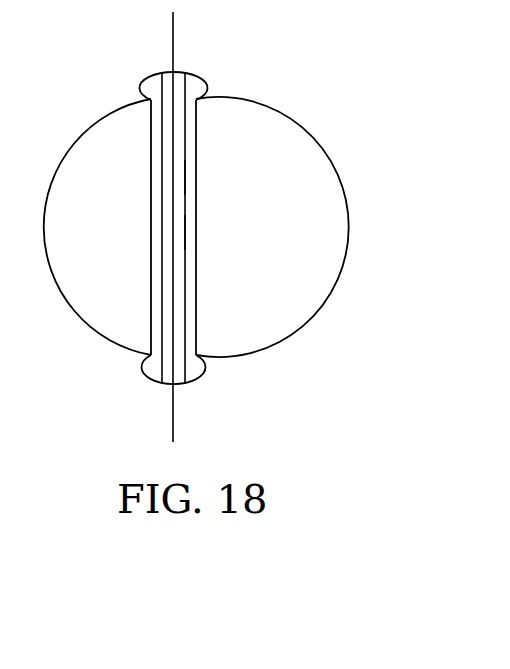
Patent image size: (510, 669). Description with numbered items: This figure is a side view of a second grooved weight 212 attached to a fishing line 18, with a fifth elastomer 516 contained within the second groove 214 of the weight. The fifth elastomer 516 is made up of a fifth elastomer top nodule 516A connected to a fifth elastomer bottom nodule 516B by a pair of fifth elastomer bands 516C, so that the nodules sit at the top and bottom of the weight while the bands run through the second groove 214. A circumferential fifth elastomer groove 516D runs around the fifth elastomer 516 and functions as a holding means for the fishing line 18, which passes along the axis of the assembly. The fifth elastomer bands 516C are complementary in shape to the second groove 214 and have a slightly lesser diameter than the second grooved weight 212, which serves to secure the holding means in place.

The fishing line 18 is at (173, 31).
The second grooved weight 212 is at (262, 138).
The second groove 214 is at (197, 318).
The fifth elastomer 516 is at (208, 87).
The fifth elastomer top nodule 516A is at (141, 89).
The fifth elastomer bottom nodule 516B is at (198, 377).
The fifth elastomer bands 516C is at (186, 233).
The fifth elastomer groove 516D is at (186, 178).